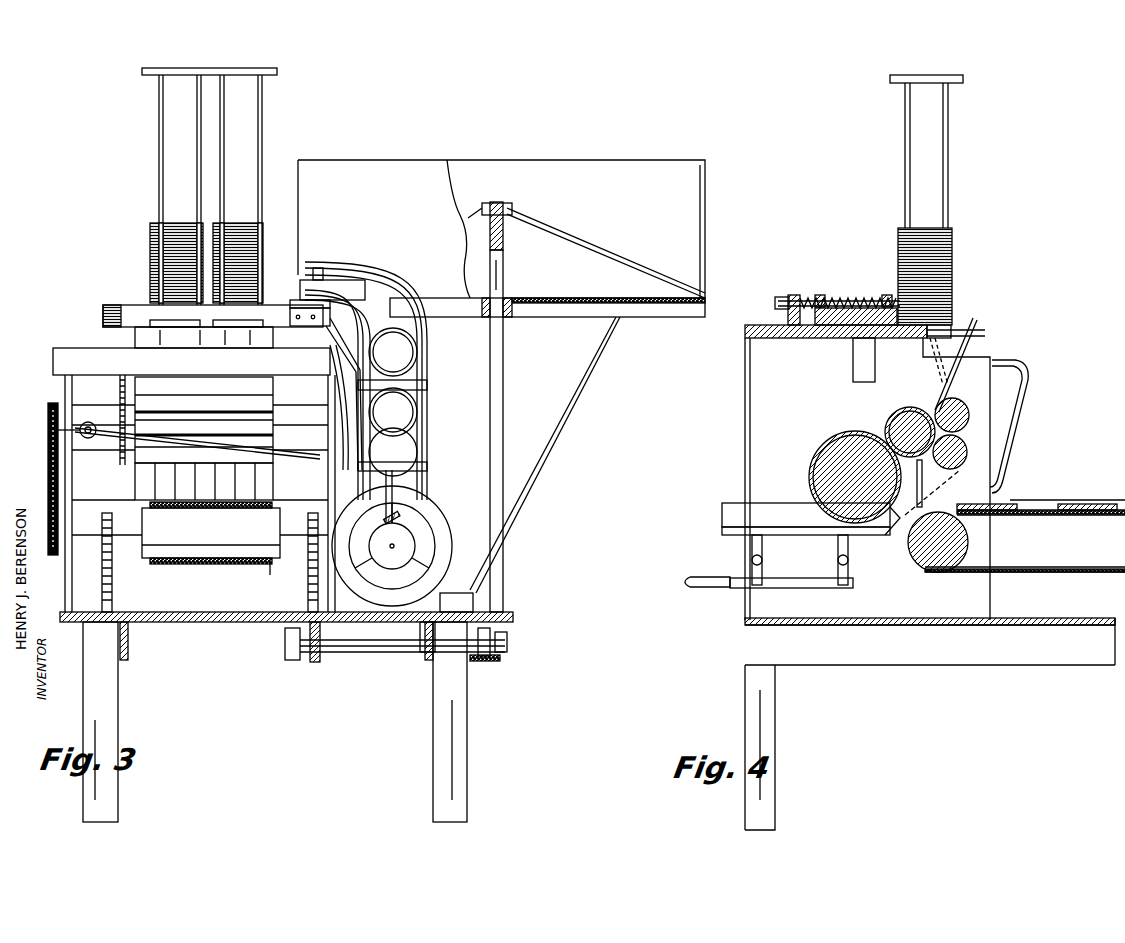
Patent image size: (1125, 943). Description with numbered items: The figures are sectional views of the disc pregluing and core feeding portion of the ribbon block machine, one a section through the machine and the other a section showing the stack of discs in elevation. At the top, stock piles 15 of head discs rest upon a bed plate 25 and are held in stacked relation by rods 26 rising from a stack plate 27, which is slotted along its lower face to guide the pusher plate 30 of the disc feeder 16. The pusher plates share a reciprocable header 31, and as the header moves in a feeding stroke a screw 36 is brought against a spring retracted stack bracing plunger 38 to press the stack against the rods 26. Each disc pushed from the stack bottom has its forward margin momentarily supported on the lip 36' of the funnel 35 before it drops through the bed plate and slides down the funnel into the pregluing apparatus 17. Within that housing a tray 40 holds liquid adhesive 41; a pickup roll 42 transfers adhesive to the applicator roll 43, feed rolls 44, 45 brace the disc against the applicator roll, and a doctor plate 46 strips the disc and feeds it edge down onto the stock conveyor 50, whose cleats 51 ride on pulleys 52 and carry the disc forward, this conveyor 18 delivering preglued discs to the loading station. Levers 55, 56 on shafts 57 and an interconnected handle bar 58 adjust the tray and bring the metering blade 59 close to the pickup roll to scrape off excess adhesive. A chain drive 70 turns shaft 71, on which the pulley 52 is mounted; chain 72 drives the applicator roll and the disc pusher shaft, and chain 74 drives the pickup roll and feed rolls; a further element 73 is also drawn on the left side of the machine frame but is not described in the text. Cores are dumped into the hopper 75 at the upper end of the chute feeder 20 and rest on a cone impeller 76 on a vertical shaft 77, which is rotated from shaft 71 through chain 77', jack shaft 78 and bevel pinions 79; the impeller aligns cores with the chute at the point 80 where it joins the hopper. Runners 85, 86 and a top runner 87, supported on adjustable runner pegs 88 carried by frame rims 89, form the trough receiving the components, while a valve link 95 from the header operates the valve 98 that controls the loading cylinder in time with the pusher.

In FIG. 3, the stock pile of head discs 15 is at (150, 230).
In FIG. 4, the stock pile of head discs 15 is at (953, 243).
In FIG. 4, the disc feeder 16 is at (830, 300).
In FIG. 3, the pregluing apparatus 17 is at (85, 350).
In FIG. 4, the pregluing apparatus 17 is at (745, 402).
In FIG. 3, the conveyor 18 is at (195, 545).
In FIG. 4, the conveyor 18 is at (1030, 508).
In FIG. 3, the chute feeder 20 is at (428, 362).
In FIG. 4, the bed plate 25 is at (745, 331).
In FIG. 3, the rods 26 is at (192, 176).
In FIG. 4, the rods 26 is at (943, 185).
In FIG. 3, the stack plate 27 is at (148, 305).
In FIG. 4, the stack plate 27 is at (953, 320).
In FIG. 4, the pusher plate 30 is at (805, 345).
In FIG. 3, the reciprocable header 31 is at (290, 298).
In FIG. 4, the reciprocable header 31 is at (778, 292).
In FIG. 3, the funnel 35 is at (280, 338).
In FIG. 4, the funnel 35 is at (970, 352).
In FIG. 4, the screw 36 is at (817, 299).
In FIG. 3, the lip of funnel 36' is at (204, 350).
In FIG. 4, the lip of funnel 36' is at (976, 349).
In FIG. 4, the stack bracing plunger 38 is at (856, 305).
In FIG. 4, the tray 40 is at (722, 526).
In FIG. 4, the liquid adhesive 41 is at (762, 505).
In FIG. 4, the pickup roll 42 is at (814, 452).
In FIG. 4, the applicator roll 43 is at (888, 420).
In FIG. 3, the feed roll 44 is at (212, 410).
In FIG. 4, the feed roll 44 is at (955, 400).
In FIG. 3, the feed roll 45 is at (138, 452).
In FIG. 4, the feed roll 45 is at (960, 466).
In FIG. 3, the doctor plate 46 is at (262, 485).
In FIG. 4, the doctor plate 46 is at (923, 492).
In FIG. 3, the stock conveyor 50 is at (235, 555).
In FIG. 4, the stock conveyor 50 is at (1020, 508).
In FIG. 4, the cleats 51 is at (1068, 500).
In FIG. 3, the stock conveyor pulley 52 is at (272, 568).
In FIG. 4, the stock conveyor pulley 52 is at (960, 548).
In FIG. 4, the lever 55 is at (765, 548).
In FIG. 4, the lever 56 is at (848, 548).
In FIG. 4, the shafts 57 is at (840, 562).
In FIG. 4, the handle bar 58 is at (782, 588).
In FIG. 4, the metering blade 59 is at (892, 535).
In FIG. 3, the chain drive 70 is at (112, 598).
In FIG. 3, the shaft 71 is at (113, 548).
In FIG. 4, the shaft 71 is at (924, 575).
In FIG. 3, the chain drive 72 is at (48, 458).
In FIG. 3, the adjusting screw 73 is at (118, 390).
In FIG. 3, the chain 74 is at (322, 388).
In FIG. 4, the chain 74 is at (970, 420).
In FIG. 3, the hopper 75 is at (706, 230).
In FIG. 3, the cone impeller 76 is at (572, 250).
In FIG. 3, the vertical shaft 77 is at (547, 407).
In FIG. 3, the chain 77' is at (289, 600).
In FIG. 3, the jack shaft 78 is at (418, 668).
In FIG. 3, the bevel pinions 79 is at (495, 650).
In FIG. 3, the point where chute joins hopper 80 is at (328, 278).
In FIG. 3, the runner 85 is at (348, 640).
In FIG. 3, the runner 86 is at (385, 600).
In FIG. 3, the top runner 87 is at (405, 518).
In FIG. 3, the adjustable runner pegs 88 is at (420, 575).
In FIG. 3, the frame rims 89 is at (440, 512).
In FIG. 3, the valve link 95 is at (345, 315).
In FIG. 3, the valve 98 is at (475, 602).